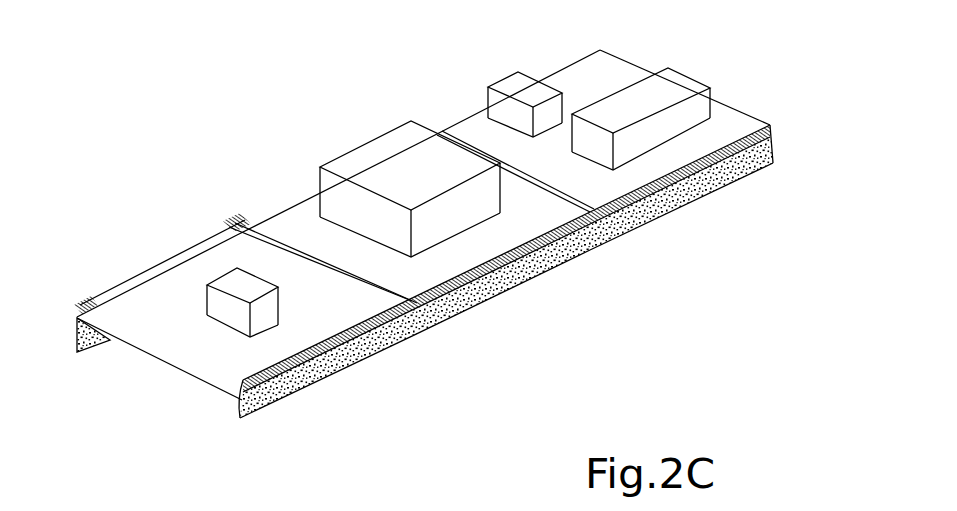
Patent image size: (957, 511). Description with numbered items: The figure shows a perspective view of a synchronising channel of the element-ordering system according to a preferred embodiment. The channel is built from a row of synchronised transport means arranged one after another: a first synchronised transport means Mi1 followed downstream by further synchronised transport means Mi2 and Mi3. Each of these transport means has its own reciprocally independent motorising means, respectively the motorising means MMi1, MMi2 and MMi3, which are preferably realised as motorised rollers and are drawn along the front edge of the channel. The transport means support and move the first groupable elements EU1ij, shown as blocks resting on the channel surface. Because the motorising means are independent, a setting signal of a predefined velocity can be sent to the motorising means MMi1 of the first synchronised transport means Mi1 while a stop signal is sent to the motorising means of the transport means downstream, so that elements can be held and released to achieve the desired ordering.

The first groupable elements EU1ij is at (370, 160).
The first synchronised transport means Mi1 is at (185, 343).
The synchronised transport means Mi2 is at (453, 257).
The synchronised transport means Mi3 is at (573, 178).
The motorising means MMi1 is at (260, 397).
The motorising means MMi2 is at (453, 315).
The motorising means MMi3 is at (613, 220).